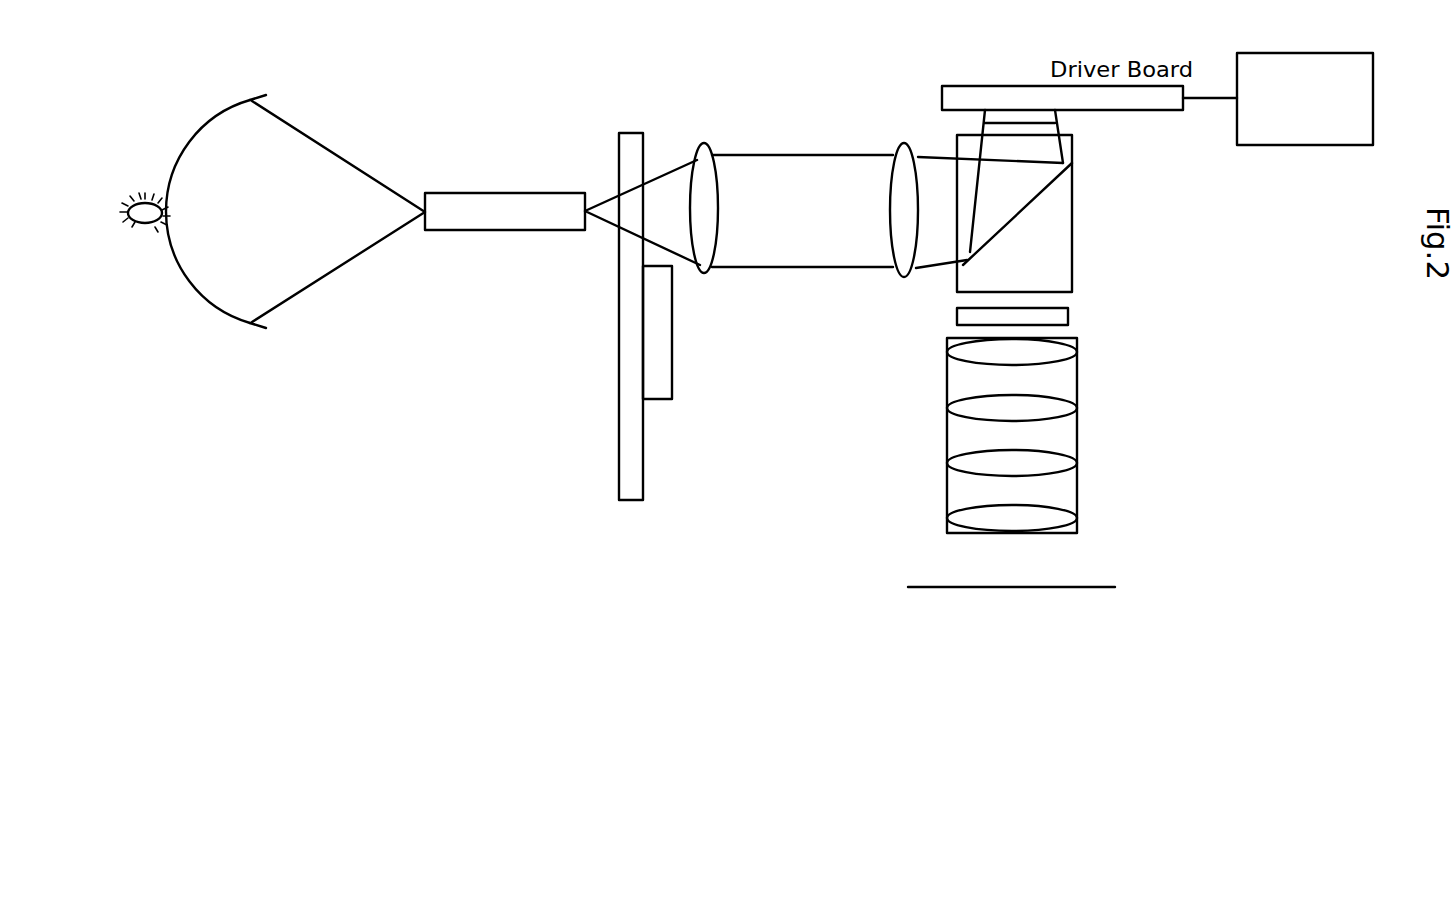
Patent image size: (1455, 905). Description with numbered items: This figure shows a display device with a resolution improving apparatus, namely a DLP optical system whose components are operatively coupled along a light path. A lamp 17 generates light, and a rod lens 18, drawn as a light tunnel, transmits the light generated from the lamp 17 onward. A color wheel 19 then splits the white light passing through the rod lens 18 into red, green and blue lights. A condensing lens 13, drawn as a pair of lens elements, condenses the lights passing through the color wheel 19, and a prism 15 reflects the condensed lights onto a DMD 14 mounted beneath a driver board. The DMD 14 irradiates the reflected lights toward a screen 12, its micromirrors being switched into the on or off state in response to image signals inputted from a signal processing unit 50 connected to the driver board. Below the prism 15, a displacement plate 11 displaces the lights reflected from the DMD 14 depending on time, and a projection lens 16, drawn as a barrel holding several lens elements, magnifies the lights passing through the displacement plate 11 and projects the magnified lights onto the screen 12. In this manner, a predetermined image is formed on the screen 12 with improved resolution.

The displacement plate 11 is at (1068, 316).
The screen 12 is at (1070, 587).
The condensing lens 13 is at (903, 273).
The DMD 14 is at (1023, 115).
The prism 15 is at (1072, 235).
The projection lens 16 is at (1077, 463).
The lamp 17 is at (196, 315).
The rod lens 18 is at (445, 193).
The color wheel 19 is at (618, 362).
The signal processing unit 50 is at (1303, 145).